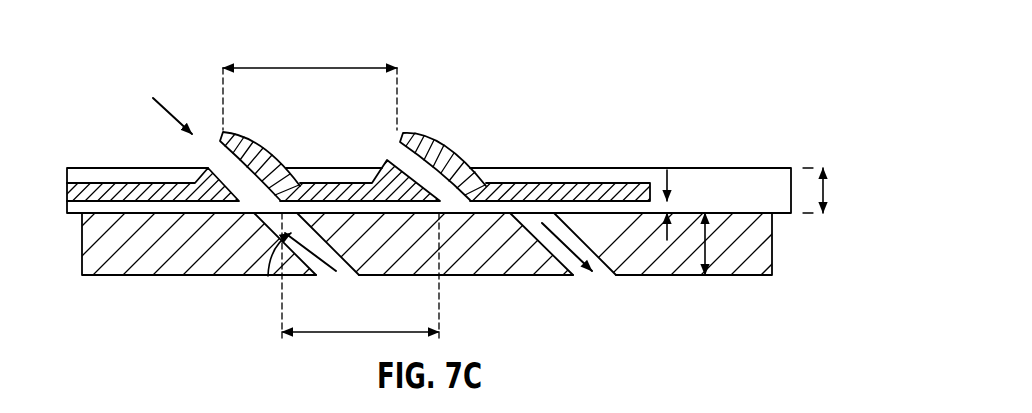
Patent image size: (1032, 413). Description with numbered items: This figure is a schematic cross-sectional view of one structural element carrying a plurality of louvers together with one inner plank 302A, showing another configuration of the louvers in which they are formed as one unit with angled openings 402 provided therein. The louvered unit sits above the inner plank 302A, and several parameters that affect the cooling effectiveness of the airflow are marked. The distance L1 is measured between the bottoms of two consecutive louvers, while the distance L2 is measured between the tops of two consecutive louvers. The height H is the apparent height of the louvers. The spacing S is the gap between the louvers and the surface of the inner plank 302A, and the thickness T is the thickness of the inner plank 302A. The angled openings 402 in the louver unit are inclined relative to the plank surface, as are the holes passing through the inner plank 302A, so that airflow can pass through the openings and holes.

The angled openings 402 is at (233, 172).
The inner plank 302A is at (753, 238).
The spacing S is at (668, 187).
The apparent height H is at (829, 190).
The thickness T is at (708, 240).
The distance between louver bottoms L1 is at (360, 275).
The distance between louver tops L2 is at (310, 79).